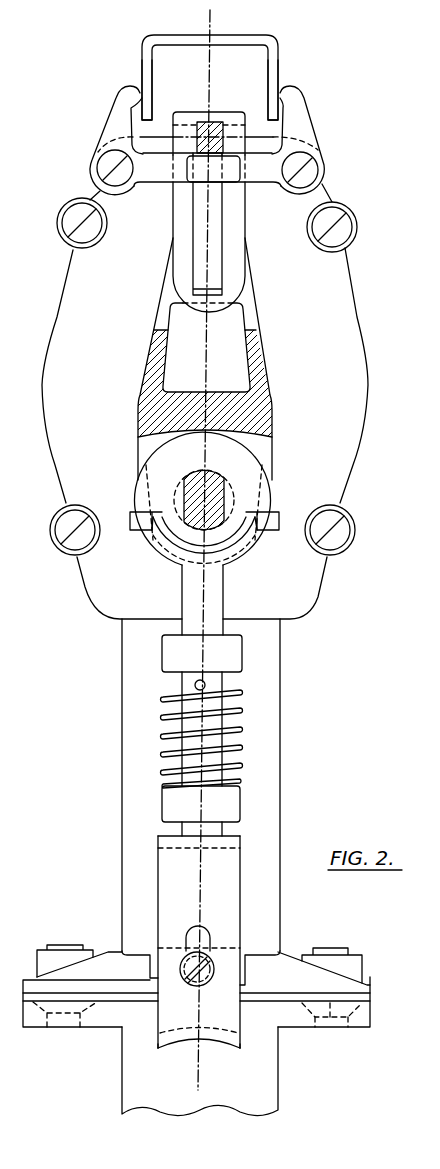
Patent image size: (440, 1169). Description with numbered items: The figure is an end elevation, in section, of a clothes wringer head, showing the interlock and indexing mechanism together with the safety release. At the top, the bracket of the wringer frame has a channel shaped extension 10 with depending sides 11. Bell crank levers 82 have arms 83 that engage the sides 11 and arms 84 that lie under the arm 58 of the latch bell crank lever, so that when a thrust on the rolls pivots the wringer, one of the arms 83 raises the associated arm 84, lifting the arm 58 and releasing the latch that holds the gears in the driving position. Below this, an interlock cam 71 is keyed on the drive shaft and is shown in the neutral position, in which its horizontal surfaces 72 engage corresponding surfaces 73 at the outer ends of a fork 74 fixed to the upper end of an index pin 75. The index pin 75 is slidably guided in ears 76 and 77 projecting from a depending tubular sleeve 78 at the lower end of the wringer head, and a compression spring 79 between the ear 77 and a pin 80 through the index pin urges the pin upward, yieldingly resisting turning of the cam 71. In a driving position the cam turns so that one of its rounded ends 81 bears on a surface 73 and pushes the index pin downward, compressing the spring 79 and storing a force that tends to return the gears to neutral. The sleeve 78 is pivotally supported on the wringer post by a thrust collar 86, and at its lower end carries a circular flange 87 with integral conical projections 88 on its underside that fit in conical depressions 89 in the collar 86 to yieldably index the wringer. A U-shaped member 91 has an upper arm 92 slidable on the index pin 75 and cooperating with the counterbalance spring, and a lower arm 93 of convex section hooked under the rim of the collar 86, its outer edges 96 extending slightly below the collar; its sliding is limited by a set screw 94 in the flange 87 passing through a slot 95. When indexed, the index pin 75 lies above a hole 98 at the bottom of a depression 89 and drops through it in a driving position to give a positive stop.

The channel shaped extension 10 is at (237, 35).
The depending sides 11 is at (155, 71).
The arm of bell crank lever 58 is at (212, 123).
The interlock cam 71 is at (268, 490).
The horizontal surfaces 72 is at (143, 507).
The surfaces 73 is at (136, 530).
The fork 74 is at (166, 557).
The index pin 75 is at (222, 609).
The ear 76 is at (242, 653).
The ear 77 is at (240, 806).
The tubular sleeve 78 is at (280, 746).
The compression spring 79 is at (235, 730).
The pin 80 is at (195, 686).
The rounded ends 81 is at (130, 517).
The bell crank levers 82 is at (94, 164).
The arms 83 is at (130, 92).
The arms 84 is at (157, 183).
The thrust collar 86 is at (298, 1028).
The circular flange 87 is at (367, 992).
The conical projections 88 is at (50, 997).
The conical depressions 89 is at (353, 1013).
The U-shaped member 91 is at (232, 892).
The upper arm 92 is at (240, 838).
The lower arm 93 is at (197, 1039).
The set screw 94 is at (186, 969).
The slot 95 is at (207, 932).
The outer edges 96 is at (156, 1047).
The hole 98 is at (337, 1030).